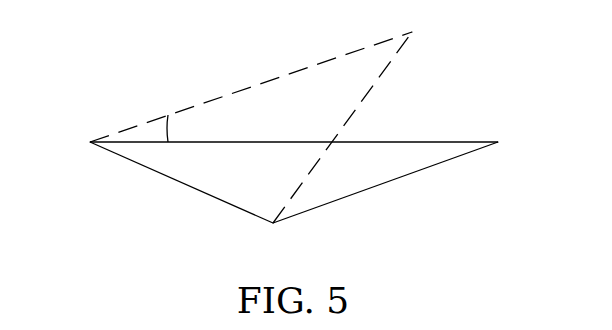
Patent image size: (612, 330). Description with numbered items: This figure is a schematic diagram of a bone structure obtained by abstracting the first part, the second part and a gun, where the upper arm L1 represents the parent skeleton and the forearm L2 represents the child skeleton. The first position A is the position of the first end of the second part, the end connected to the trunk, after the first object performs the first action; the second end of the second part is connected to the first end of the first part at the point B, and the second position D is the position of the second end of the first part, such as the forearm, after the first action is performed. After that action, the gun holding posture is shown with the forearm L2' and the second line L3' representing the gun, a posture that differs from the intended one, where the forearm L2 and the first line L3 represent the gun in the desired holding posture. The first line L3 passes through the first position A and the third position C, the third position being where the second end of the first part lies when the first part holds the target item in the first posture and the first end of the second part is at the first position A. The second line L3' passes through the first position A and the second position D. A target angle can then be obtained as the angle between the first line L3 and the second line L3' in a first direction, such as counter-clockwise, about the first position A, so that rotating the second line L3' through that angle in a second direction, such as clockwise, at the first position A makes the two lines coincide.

The first position A is at (76, 150).
The point B is at (272, 242).
The third position C is at (510, 150).
The second position D is at (424, 32).
The upper arm L1 is at (181, 182).
The forearm L2 is at (385, 185).
The first line L3 is at (294, 157).
The forearm L2' is at (344, 127).
The second line L3' is at (251, 87).